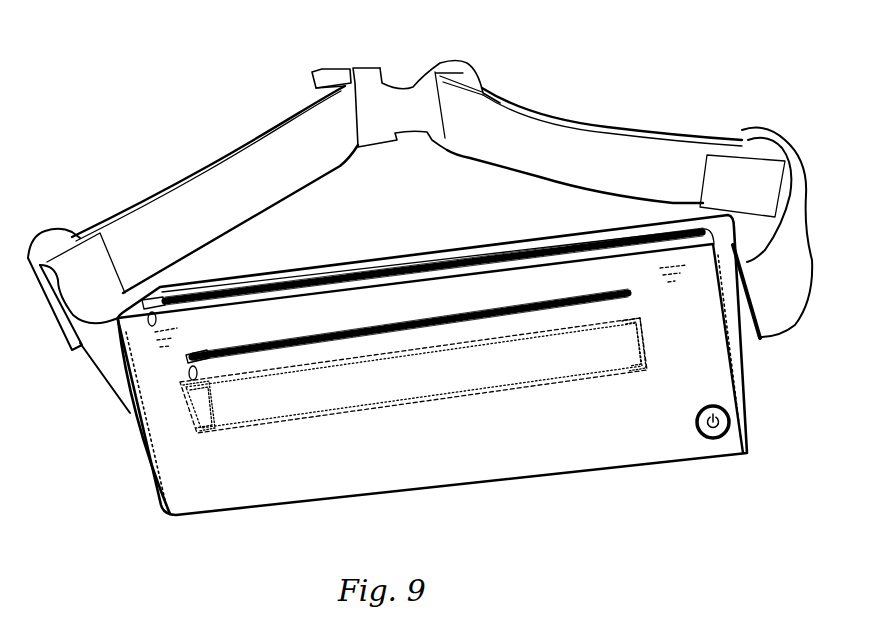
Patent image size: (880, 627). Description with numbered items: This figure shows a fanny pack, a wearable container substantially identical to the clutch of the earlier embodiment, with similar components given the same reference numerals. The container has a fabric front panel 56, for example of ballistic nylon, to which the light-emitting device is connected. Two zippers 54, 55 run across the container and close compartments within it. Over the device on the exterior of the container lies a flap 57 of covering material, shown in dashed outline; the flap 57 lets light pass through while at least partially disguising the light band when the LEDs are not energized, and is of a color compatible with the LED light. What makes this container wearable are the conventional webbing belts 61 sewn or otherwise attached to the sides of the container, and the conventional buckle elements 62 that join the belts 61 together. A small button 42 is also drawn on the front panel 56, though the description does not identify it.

The power button 42 is at (712, 438).
The zipper 54 is at (320, 287).
The zipper 55 is at (433, 320).
The front panel 56 is at (441, 472).
The flap 57 is at (550, 366).
The webbing belts 61 is at (252, 165).
The buckle elements 62 is at (396, 48).